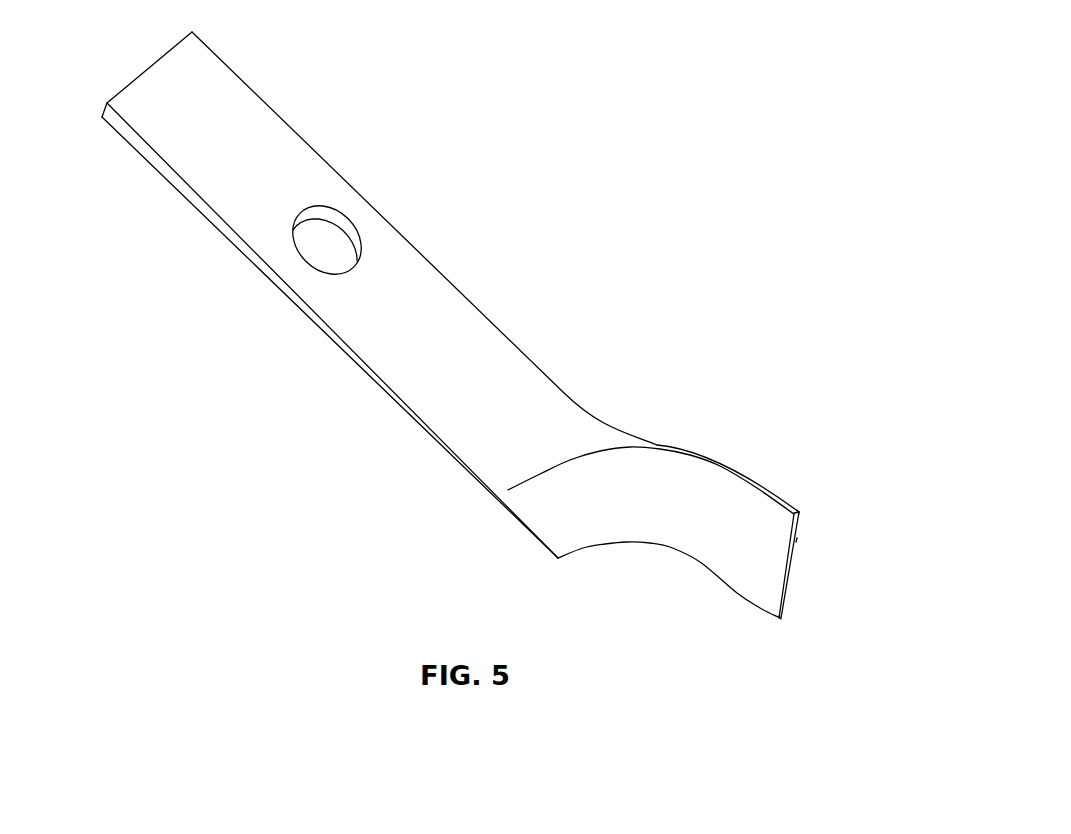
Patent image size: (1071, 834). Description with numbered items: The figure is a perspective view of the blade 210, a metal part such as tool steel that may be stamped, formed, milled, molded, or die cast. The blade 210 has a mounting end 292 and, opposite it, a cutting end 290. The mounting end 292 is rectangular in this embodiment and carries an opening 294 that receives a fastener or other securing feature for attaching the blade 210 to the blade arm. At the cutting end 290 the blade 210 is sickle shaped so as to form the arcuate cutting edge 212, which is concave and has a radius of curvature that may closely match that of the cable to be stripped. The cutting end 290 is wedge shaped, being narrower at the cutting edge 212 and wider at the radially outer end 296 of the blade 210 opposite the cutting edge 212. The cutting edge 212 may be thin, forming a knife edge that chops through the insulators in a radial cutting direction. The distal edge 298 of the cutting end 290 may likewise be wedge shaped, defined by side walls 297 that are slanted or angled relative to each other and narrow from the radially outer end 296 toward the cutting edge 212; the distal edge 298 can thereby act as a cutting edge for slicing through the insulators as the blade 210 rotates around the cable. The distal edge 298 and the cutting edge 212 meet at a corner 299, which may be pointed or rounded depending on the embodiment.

The blade 210 is at (497, 351).
The arcuate cutting edge 212 is at (673, 548).
The cutting end 290 is at (778, 555).
The mounting end 292 is at (380, 384).
The opening 294 is at (336, 218).
The radially outer end 296 is at (690, 450).
The side walls 297 is at (798, 540).
The distal edge 298 is at (800, 529).
The corner 299 is at (780, 619).